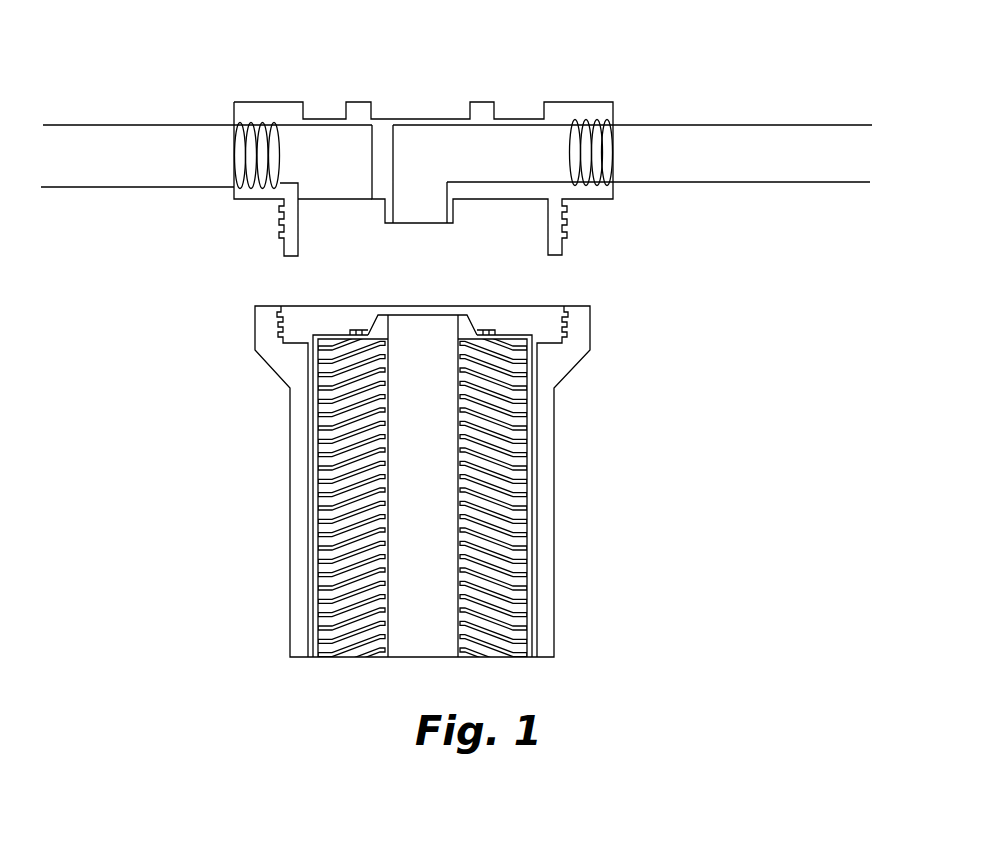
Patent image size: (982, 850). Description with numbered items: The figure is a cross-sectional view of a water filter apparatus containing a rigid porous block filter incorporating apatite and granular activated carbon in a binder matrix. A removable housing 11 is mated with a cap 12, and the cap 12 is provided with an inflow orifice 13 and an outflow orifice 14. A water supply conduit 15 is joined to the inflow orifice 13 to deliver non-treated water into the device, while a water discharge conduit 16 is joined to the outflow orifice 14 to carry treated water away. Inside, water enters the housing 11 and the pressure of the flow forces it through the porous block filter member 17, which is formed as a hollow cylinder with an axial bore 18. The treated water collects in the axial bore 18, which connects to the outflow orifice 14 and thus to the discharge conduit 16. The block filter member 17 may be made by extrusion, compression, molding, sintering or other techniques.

The housing 11 is at (557, 533).
The cap 12 is at (410, 118).
The inflow orifice 13 is at (268, 120).
The outflow orifice 14 is at (577, 120).
The water supply conduit 15 is at (137, 122).
The water discharge conduit 16 is at (743, 122).
The porous block filter member 17 is at (347, 498).
The axial bore 18 is at (432, 431).